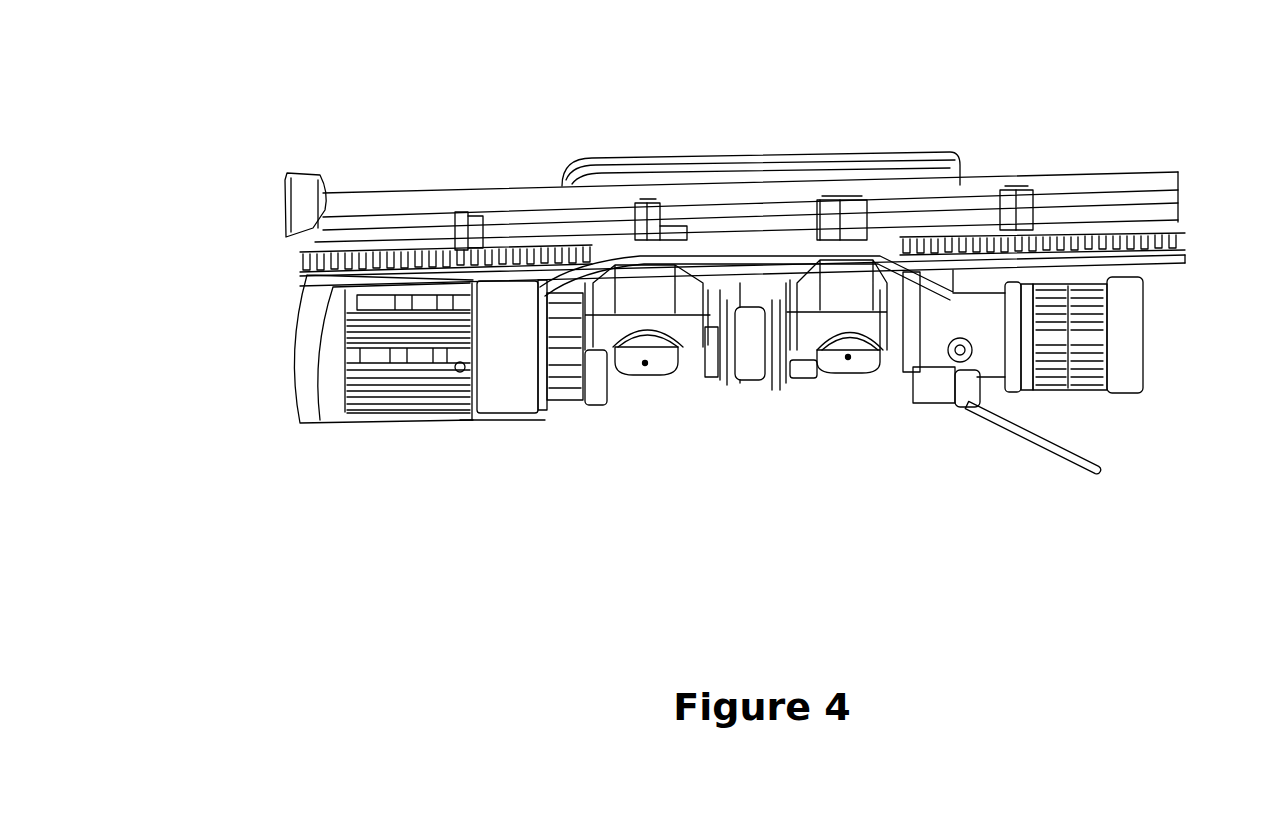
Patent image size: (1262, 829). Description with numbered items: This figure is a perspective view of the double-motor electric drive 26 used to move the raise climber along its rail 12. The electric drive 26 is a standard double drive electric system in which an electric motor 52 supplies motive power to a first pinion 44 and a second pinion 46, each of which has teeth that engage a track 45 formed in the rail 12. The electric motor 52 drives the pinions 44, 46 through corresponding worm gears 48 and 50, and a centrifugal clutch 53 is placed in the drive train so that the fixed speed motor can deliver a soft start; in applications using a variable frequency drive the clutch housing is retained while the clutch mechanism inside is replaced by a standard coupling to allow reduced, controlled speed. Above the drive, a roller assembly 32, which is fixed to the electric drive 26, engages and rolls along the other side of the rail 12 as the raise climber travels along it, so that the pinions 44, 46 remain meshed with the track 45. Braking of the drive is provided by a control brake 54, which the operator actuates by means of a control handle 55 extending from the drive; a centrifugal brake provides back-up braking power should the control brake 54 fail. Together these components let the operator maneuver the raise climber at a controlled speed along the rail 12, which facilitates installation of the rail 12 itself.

The rail 12 is at (246, 204).
The electric drive 26 is at (329, 472).
The roller assembly 32 is at (608, 180).
The first pinion 44 is at (635, 222).
The track 45 is at (316, 261).
The second pinion 46 is at (863, 220).
The worm gear 48 is at (642, 288).
The worm gear 50 is at (857, 287).
The electric motor 52 is at (398, 420).
The centrifugal clutch 53 is at (503, 395).
The control brake 54 is at (932, 362).
The control handle 55 is at (1053, 455).